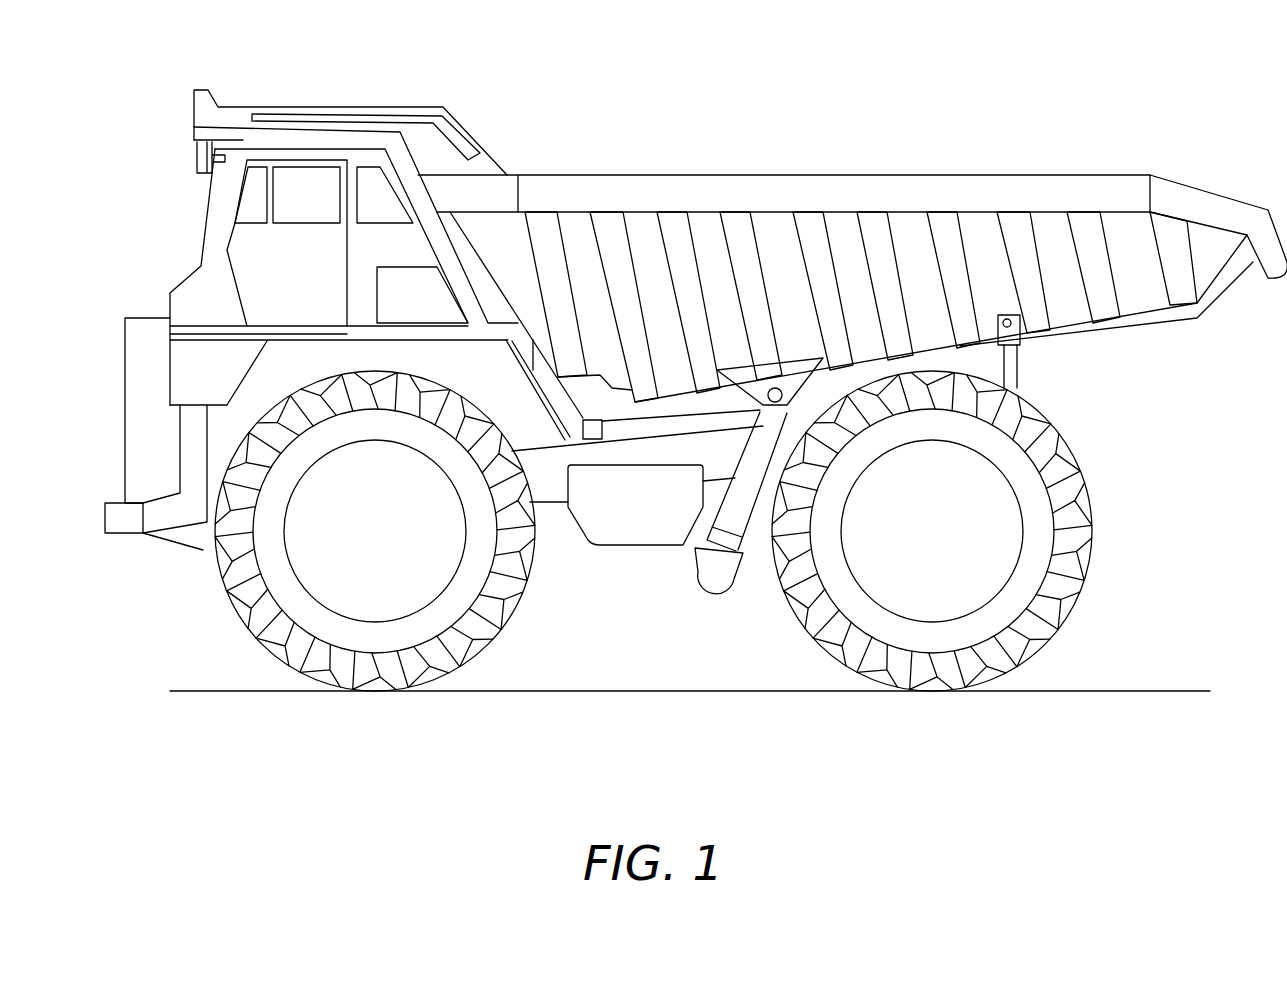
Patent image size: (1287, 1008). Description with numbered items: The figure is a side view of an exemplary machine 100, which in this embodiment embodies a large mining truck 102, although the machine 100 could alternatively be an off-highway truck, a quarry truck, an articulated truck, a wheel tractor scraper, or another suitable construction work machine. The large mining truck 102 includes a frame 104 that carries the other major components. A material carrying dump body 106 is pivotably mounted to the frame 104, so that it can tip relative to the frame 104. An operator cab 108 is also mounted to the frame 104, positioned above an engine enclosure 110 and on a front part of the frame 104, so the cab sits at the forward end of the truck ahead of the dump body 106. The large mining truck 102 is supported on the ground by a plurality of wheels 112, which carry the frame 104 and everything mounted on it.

The machine 100 is at (950, 717).
The large mining truck 102 is at (310, 105).
The frame 104 is at (545, 488).
The material carrying dump body 106 is at (862, 190).
The operator cab 108 is at (260, 265).
The engine enclosure 110 is at (137, 410).
The wheels 112 is at (233, 598).